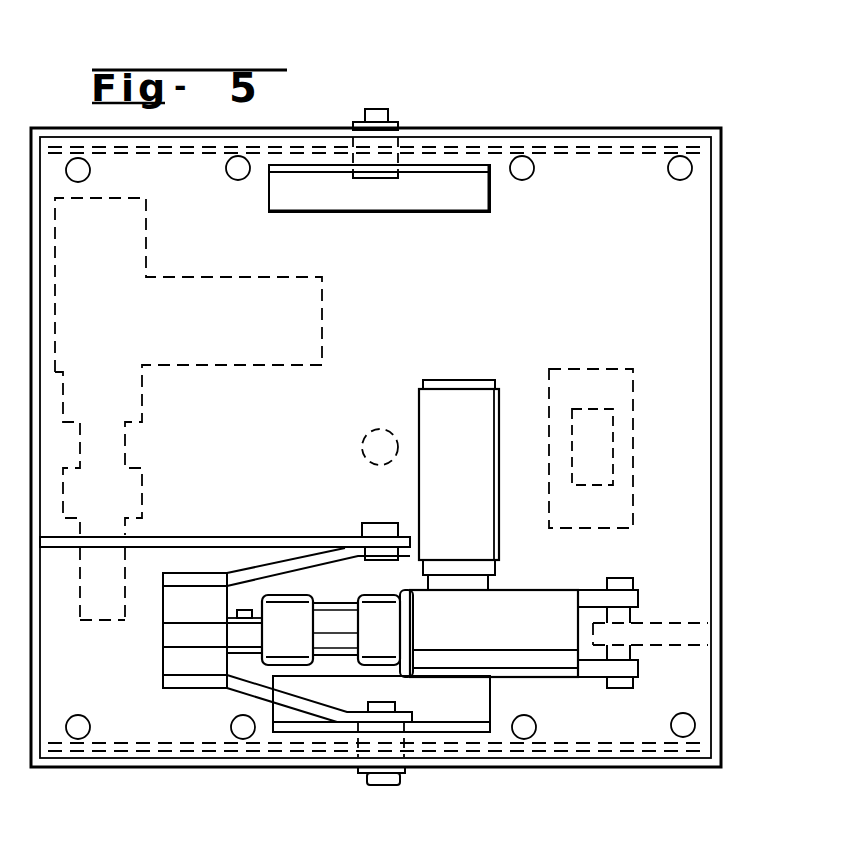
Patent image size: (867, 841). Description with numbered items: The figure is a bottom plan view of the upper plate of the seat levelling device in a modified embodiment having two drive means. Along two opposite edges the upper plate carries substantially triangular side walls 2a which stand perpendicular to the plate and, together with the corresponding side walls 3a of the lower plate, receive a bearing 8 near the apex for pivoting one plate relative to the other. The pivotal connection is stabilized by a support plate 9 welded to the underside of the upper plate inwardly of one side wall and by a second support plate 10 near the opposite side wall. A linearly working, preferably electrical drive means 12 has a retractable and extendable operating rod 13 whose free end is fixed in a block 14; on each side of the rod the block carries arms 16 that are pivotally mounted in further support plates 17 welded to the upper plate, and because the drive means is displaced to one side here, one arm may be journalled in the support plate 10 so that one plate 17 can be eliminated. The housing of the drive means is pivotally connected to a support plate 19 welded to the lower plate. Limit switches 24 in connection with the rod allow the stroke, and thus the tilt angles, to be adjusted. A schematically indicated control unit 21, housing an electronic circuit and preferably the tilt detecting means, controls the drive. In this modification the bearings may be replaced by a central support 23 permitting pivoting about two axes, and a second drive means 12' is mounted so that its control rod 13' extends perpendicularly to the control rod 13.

The side wall 2a is at (467, 762).
The side wall 3a is at (583, 750).
The bearing 8 is at (388, 112).
The support plate 9 is at (430, 180).
The support plate 10 is at (298, 725).
The drive means 12 is at (475, 534).
The second drive means 12' is at (188, 366).
The operating rod 13 is at (297, 683).
The control rod 13' is at (82, 608).
The block 14 is at (178, 610).
The arms 16 is at (193, 683).
The further support plates 17 is at (60, 538).
The support plate 19 is at (668, 627).
The control unit 21 is at (580, 392).
The central support 23 is at (382, 432).
The limit switches 24 is at (243, 610).